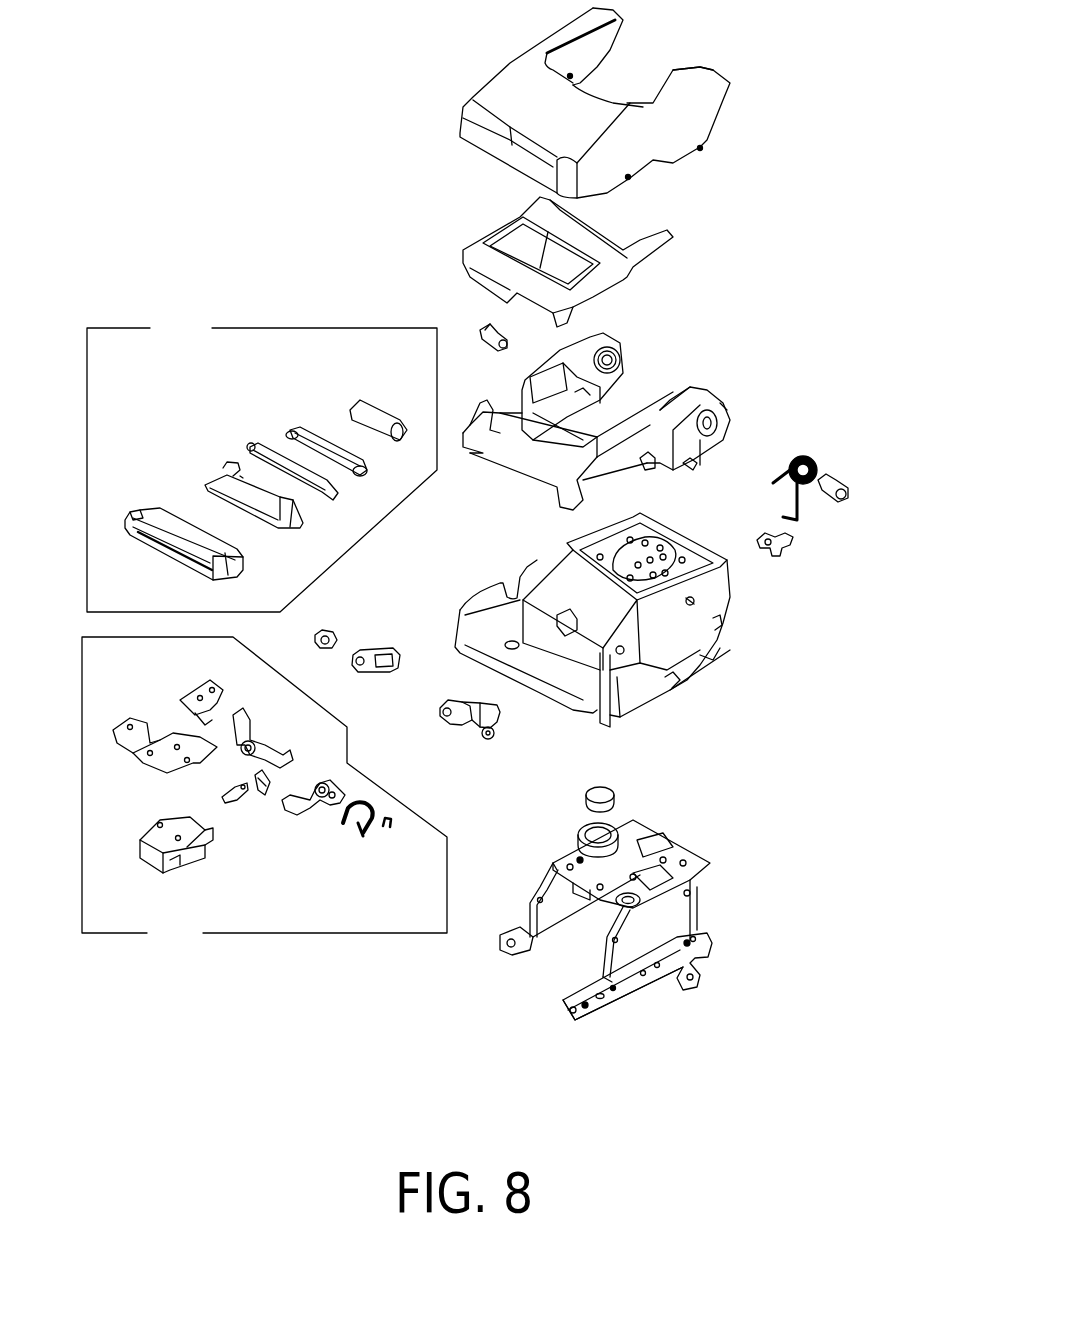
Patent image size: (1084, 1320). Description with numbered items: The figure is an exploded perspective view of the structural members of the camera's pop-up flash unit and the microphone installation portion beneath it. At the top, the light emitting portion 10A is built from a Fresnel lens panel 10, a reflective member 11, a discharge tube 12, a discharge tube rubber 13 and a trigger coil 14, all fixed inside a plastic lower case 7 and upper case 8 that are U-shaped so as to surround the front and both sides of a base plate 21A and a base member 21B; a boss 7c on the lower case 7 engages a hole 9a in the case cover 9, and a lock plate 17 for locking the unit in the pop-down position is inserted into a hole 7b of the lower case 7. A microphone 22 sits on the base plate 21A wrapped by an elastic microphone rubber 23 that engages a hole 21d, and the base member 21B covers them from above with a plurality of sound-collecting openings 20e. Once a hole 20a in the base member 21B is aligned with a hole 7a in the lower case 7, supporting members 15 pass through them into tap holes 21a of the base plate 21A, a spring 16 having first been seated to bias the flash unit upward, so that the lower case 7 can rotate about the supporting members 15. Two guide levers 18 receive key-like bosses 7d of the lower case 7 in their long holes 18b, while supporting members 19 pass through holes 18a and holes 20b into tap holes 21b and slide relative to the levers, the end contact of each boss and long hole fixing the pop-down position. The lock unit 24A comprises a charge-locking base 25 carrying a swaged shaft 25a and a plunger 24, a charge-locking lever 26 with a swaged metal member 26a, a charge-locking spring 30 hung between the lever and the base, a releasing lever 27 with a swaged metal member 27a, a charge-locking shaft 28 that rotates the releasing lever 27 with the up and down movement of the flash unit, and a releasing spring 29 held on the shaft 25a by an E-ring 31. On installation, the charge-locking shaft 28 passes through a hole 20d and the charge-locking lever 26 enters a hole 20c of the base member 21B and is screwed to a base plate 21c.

The lower case 7 is at (707, 388).
The hole 7a is at (577, 392).
The hole 7b is at (648, 460).
The boss 7c is at (690, 462).
The key-like boss 7d is at (588, 400).
The upper case 8 is at (672, 237).
The case cover 9 is at (723, 87).
The hole 9a is at (630, 178).
The Fresnel lens panel 10 is at (137, 513).
The light emitting portion 10A is at (262, 462).
The reflective member 11 is at (227, 480).
The discharge tube 12 is at (253, 447).
The discharge tube rubber 13 is at (293, 430).
The trigger coil 14 is at (353, 407).
The supporting member 15 is at (480, 330).
The spring 16 is at (810, 457).
The lock plate 17 is at (795, 533).
The guide lever 18 is at (373, 670).
The hole 18a is at (363, 667).
The long hole 18b is at (477, 703).
The supporting member 19 is at (325, 630).
The hole 20a is at (694, 602).
The hole 20b is at (716, 624).
The hole 20c is at (714, 663).
The hole 20d is at (681, 686).
The opening 20e is at (637, 580).
The base plate 21A is at (690, 853).
The base member 21B is at (670, 533).
The tap hole 21a is at (687, 893).
The tap hole 21b is at (603, 943).
The base plate 21c is at (593, 1003).
The hole 21d is at (557, 863).
The microphone 22 is at (610, 793).
The microphone rubber 23 is at (613, 830).
The plunger 24 is at (180, 857).
The lock unit 24A is at (264, 791).
The charge-locking base 25 is at (130, 718).
The shaft 25a is at (183, 700).
The charge-locking lever 26 is at (237, 727).
The metal member 26a is at (313, 727).
The releasing lever 27 is at (300, 803).
The metal member 27a is at (327, 803).
The charge-locking shaft 28 is at (267, 797).
The releasing spring 29 is at (363, 843).
The charge-locking spring 30 is at (237, 800).
The E-ring 31 is at (387, 827).